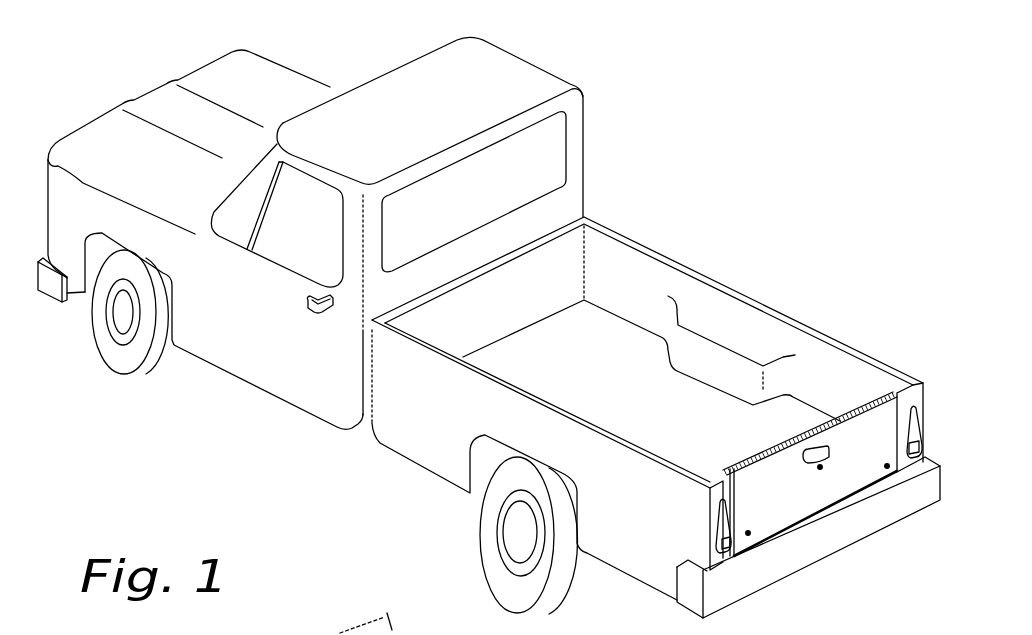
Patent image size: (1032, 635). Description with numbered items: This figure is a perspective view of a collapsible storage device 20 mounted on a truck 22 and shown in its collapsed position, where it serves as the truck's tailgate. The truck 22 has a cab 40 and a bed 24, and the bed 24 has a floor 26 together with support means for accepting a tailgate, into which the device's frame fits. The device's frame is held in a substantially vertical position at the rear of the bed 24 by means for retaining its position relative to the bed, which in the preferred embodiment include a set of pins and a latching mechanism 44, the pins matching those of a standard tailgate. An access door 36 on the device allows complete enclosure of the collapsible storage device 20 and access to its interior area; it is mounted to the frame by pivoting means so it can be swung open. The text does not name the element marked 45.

The collapsible storage device 20 is at (883, 332).
The truck 22 is at (293, 405).
The bed 24 is at (668, 254).
The floor 26 is at (622, 391).
The access door 36 is at (797, 515).
The cab 40 is at (586, 170).
The latching mechanism 44 is at (803, 463).
The fasteners 45 is at (752, 537).